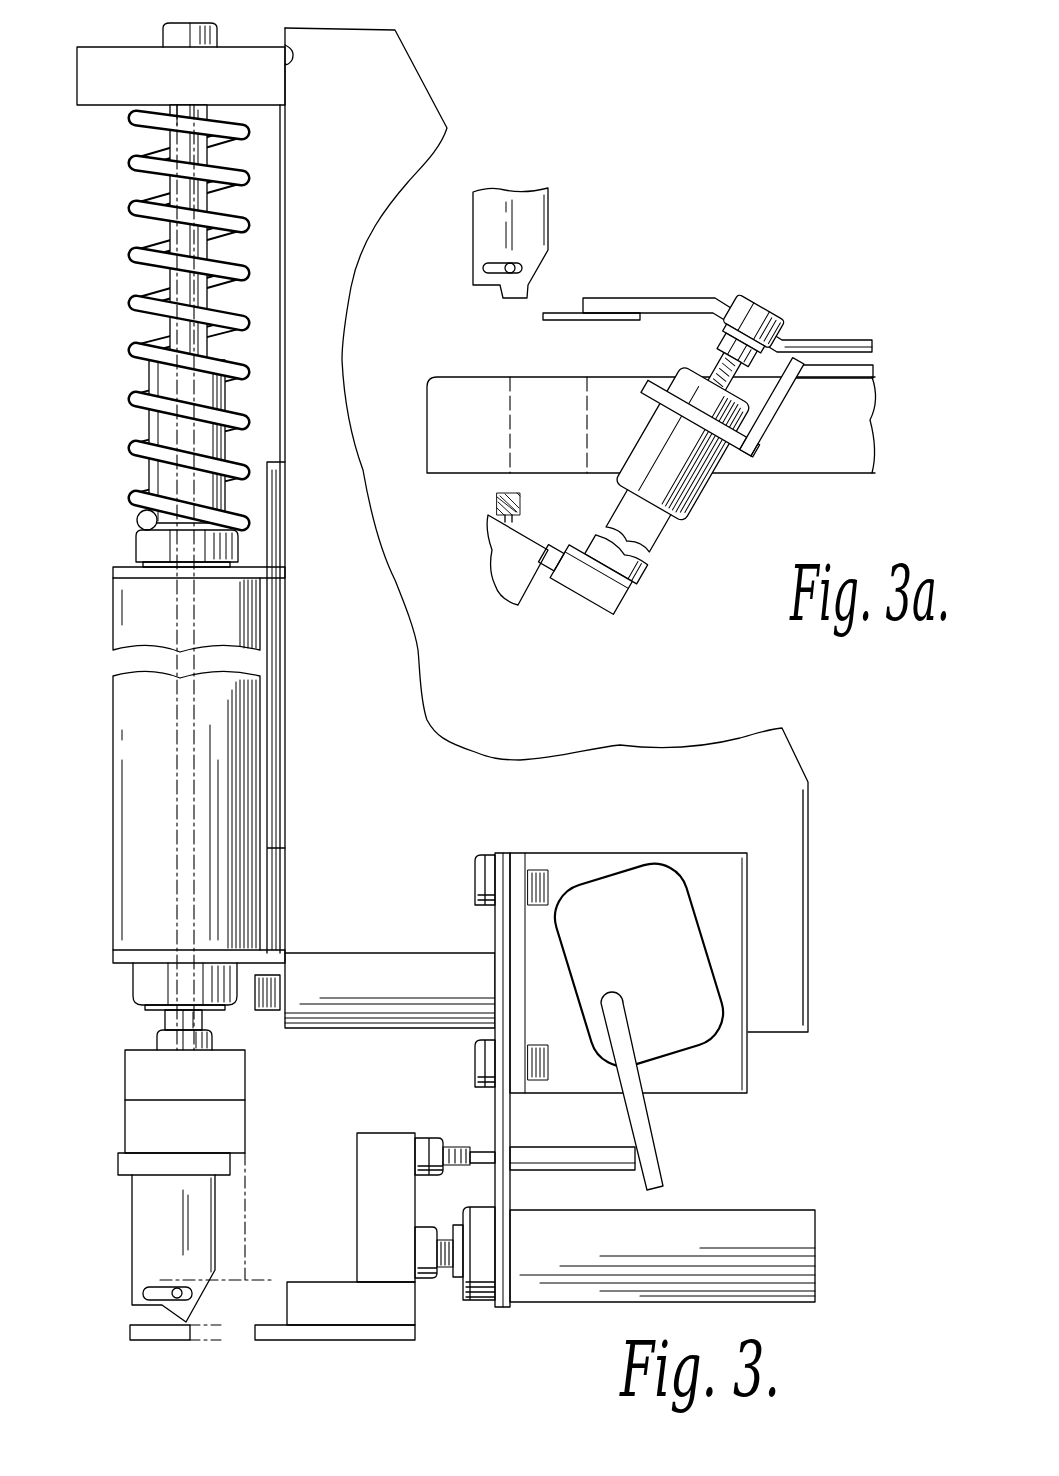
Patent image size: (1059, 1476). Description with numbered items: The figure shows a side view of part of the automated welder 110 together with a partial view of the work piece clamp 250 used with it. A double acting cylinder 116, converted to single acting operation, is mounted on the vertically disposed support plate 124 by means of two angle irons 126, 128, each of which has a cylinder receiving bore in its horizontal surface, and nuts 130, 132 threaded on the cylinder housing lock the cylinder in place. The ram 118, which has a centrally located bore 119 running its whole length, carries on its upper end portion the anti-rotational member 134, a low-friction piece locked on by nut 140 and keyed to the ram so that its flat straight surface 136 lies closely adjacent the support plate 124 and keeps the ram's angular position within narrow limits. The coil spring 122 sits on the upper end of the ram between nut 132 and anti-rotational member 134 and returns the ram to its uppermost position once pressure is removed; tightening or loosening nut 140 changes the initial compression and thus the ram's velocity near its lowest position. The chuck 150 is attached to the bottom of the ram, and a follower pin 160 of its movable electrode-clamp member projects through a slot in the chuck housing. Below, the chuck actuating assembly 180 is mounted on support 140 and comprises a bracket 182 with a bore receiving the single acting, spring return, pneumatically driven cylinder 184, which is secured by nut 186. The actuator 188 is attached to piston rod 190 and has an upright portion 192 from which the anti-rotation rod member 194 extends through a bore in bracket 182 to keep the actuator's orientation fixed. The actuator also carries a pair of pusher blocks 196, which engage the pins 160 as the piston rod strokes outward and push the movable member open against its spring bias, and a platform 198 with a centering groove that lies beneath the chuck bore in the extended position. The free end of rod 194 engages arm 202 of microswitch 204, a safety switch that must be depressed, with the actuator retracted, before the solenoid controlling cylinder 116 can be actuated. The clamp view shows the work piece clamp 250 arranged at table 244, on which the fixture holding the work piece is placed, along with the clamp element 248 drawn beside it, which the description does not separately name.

In FIG. 3, the welder 110 is at (441, 78).
In FIG. 3, the double acting cylinder 116 is at (125, 782).
In FIG. 3, the ram 118 is at (165, 229).
In FIG. 3, the centrally located bore 119 is at (162, 183).
In FIG. 3, the coil spring 122 is at (150, 576).
In FIG. 3, the support plate 124 is at (285, 426).
In FIG. 3, the angle iron 126 is at (120, 957).
In FIG. 3, the angle iron 128 is at (125, 568).
In FIG. 3, the nut 130 is at (148, 978).
In FIG. 3, the nut 132 is at (150, 545).
In FIG. 3, the anti-rotational member 134 is at (96, 100).
In FIG. 3, the flat straight surface 136 is at (285, 58).
In FIG. 3, the nut 140 is at (162, 35).
In FIG. 3, the chuck 150 is at (161, 1213).
In FIG. 3A, the chuck 150 is at (545, 243).
In FIG. 3, the follower pin 160 is at (178, 1298).
In FIG. 3, the chuck actuating assembly 180 is at (443, 1111).
In FIG. 3, the bracket 182 is at (508, 1128).
In FIG. 3, the cylinder 184 is at (612, 1286).
In FIG. 3, the nut 186 is at (480, 1300).
In FIG. 3, the actuator 188 is at (348, 1244).
In FIG. 3, the piston rod 190 is at (446, 1268).
In FIG. 3, the upright portion 192 is at (372, 1162).
In FIG. 3, the anti-rotation rod member 194 is at (555, 1162).
In FIG. 3, the pusher block 196 is at (310, 1262).
In FIG. 3, the platform 198 is at (276, 1333).
In FIG. 3, the arm 202 is at (661, 1180).
In FIG. 3, the microswitch 204 is at (695, 905).
In FIG. 3A, the table 244 is at (505, 395).
In FIG. 3A, the clamp cylinder 248 is at (705, 500).
In FIG. 3A, the clamp 250 is at (712, 300).